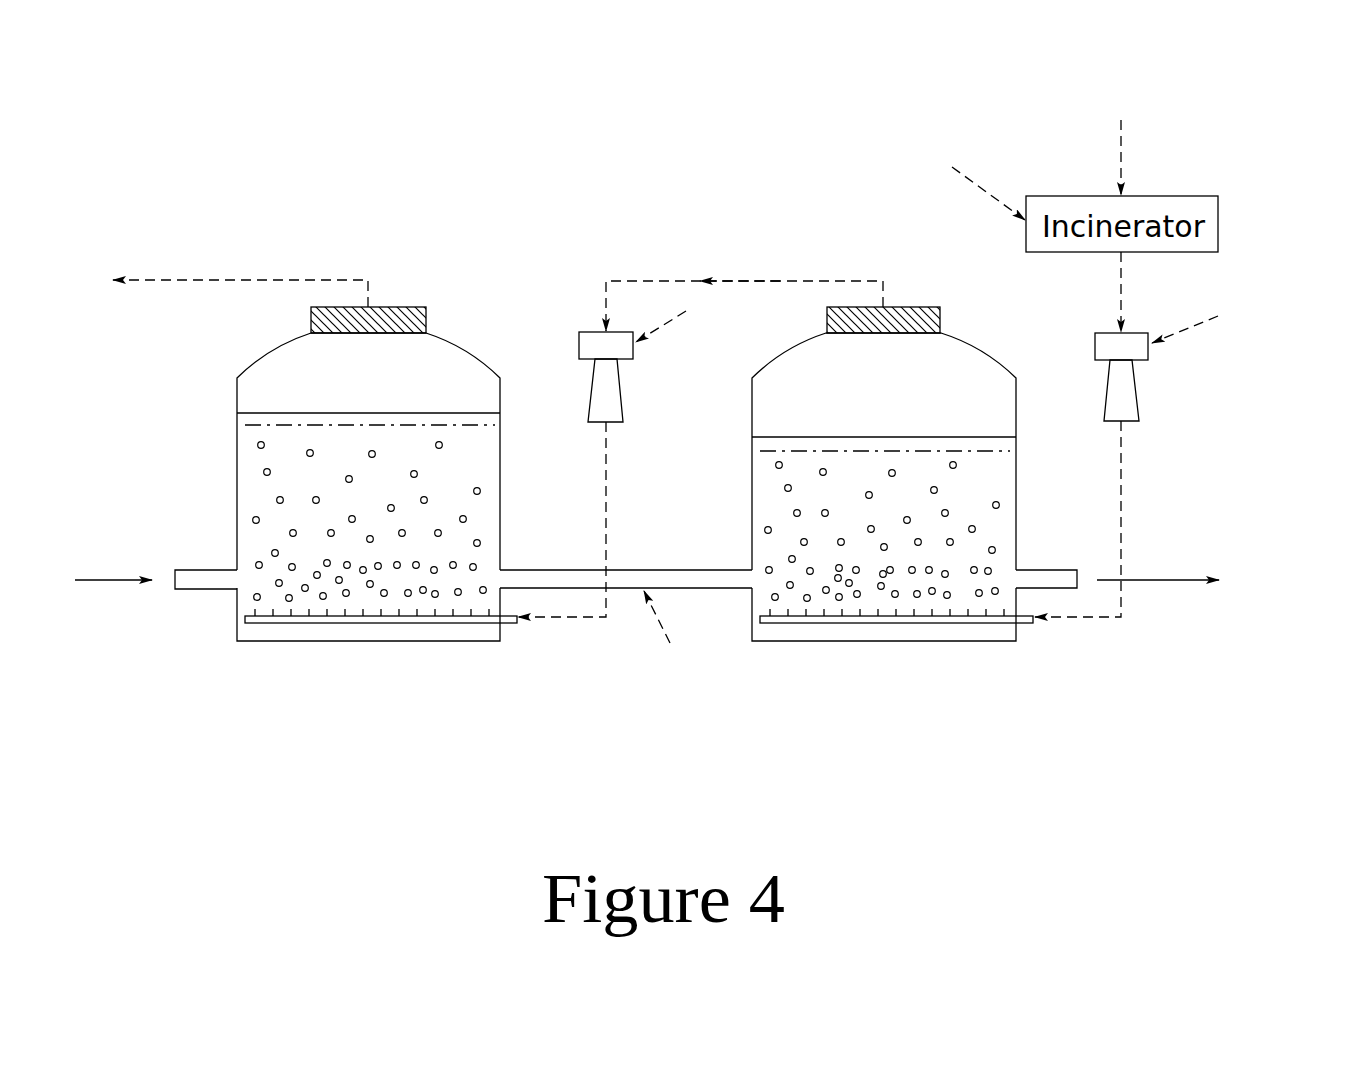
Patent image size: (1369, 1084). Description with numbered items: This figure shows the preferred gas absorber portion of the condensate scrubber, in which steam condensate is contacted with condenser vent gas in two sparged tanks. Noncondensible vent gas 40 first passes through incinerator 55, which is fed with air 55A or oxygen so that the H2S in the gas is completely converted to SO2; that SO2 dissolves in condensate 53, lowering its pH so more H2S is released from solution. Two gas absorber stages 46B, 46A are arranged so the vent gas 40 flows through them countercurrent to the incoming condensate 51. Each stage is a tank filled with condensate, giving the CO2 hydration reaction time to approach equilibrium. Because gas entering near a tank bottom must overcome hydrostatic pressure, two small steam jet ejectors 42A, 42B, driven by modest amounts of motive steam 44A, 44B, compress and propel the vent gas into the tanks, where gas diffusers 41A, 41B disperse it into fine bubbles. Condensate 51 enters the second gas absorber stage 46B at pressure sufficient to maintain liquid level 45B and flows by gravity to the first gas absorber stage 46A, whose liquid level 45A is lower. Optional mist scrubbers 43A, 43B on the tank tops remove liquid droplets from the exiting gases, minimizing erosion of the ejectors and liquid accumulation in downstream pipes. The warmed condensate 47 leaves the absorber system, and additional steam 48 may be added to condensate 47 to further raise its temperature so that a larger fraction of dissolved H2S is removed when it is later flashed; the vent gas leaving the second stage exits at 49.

The noncondensible gas 40 is at (1122, 160).
The gas diffuser 41A is at (935, 623).
The gas diffuser 41B is at (455, 623).
The steam jet ejector 42A is at (1137, 397).
The steam jet ejector 42B is at (622, 385).
The mist scrubber 43A is at (907, 317).
The mist scrubber 43B is at (390, 315).
The motive steam 44A is at (1182, 333).
The motive steam 44B is at (658, 330).
The liquid level 45A is at (975, 437).
The liquid level 45B is at (435, 413).
The first gas absorber stage 46A is at (917, 731).
The second gas absorber stage 46B is at (398, 731).
The condensate 47 is at (1167, 580).
The additional steam 48 is at (662, 622).
The vent gas outlet 49 is at (210, 280).
The condensate 51 is at (105, 580).
The condensate 53 is at (629, 578).
The incinerator 55 is at (1068, 196).
The air 55A is at (980, 190).